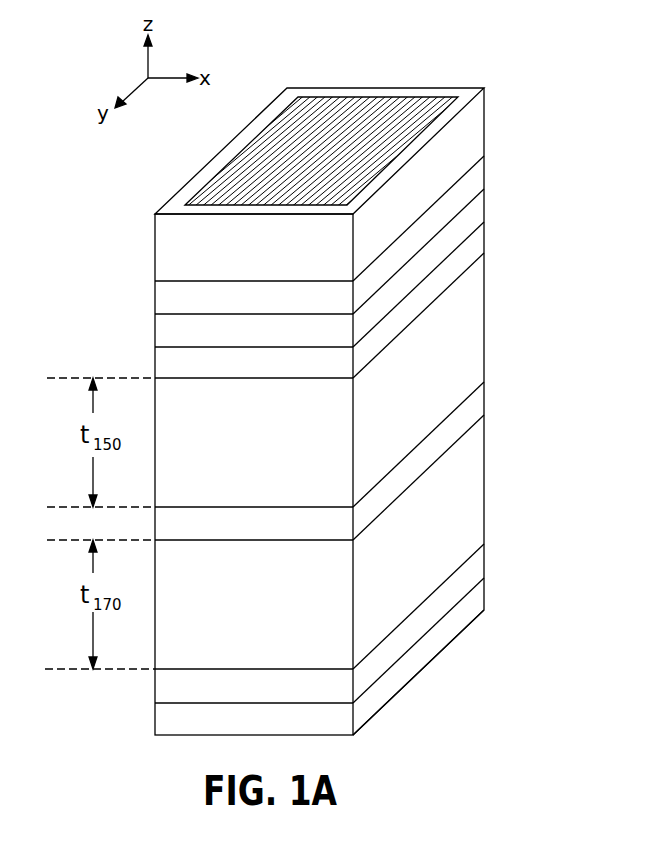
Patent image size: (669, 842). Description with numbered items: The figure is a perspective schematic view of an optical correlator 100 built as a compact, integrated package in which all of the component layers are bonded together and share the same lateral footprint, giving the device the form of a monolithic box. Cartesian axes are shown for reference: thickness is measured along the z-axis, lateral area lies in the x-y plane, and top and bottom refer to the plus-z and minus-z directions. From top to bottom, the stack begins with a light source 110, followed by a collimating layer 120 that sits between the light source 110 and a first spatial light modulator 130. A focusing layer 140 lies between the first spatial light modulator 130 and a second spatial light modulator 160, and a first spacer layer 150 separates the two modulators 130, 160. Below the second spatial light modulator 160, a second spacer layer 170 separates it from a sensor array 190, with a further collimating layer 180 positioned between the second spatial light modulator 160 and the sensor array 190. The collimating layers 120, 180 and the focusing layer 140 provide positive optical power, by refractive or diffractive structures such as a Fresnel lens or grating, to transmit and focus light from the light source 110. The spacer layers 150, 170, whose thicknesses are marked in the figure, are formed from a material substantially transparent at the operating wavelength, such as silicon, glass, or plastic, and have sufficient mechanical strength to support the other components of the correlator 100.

The optical correlator 100 is at (582, 88).
The light source 110 is at (484, 138).
The collimating layer 120 is at (484, 170).
The first spatial light modulator 130 is at (484, 203).
The focusing layer 140 is at (484, 237).
The first spacer layer 150 is at (484, 320).
The second spatial light modulator 160 is at (484, 403).
The second spacer layer 170 is at (484, 487).
The further collimating layer 180 is at (484, 562).
The sensor array 190 is at (484, 600).